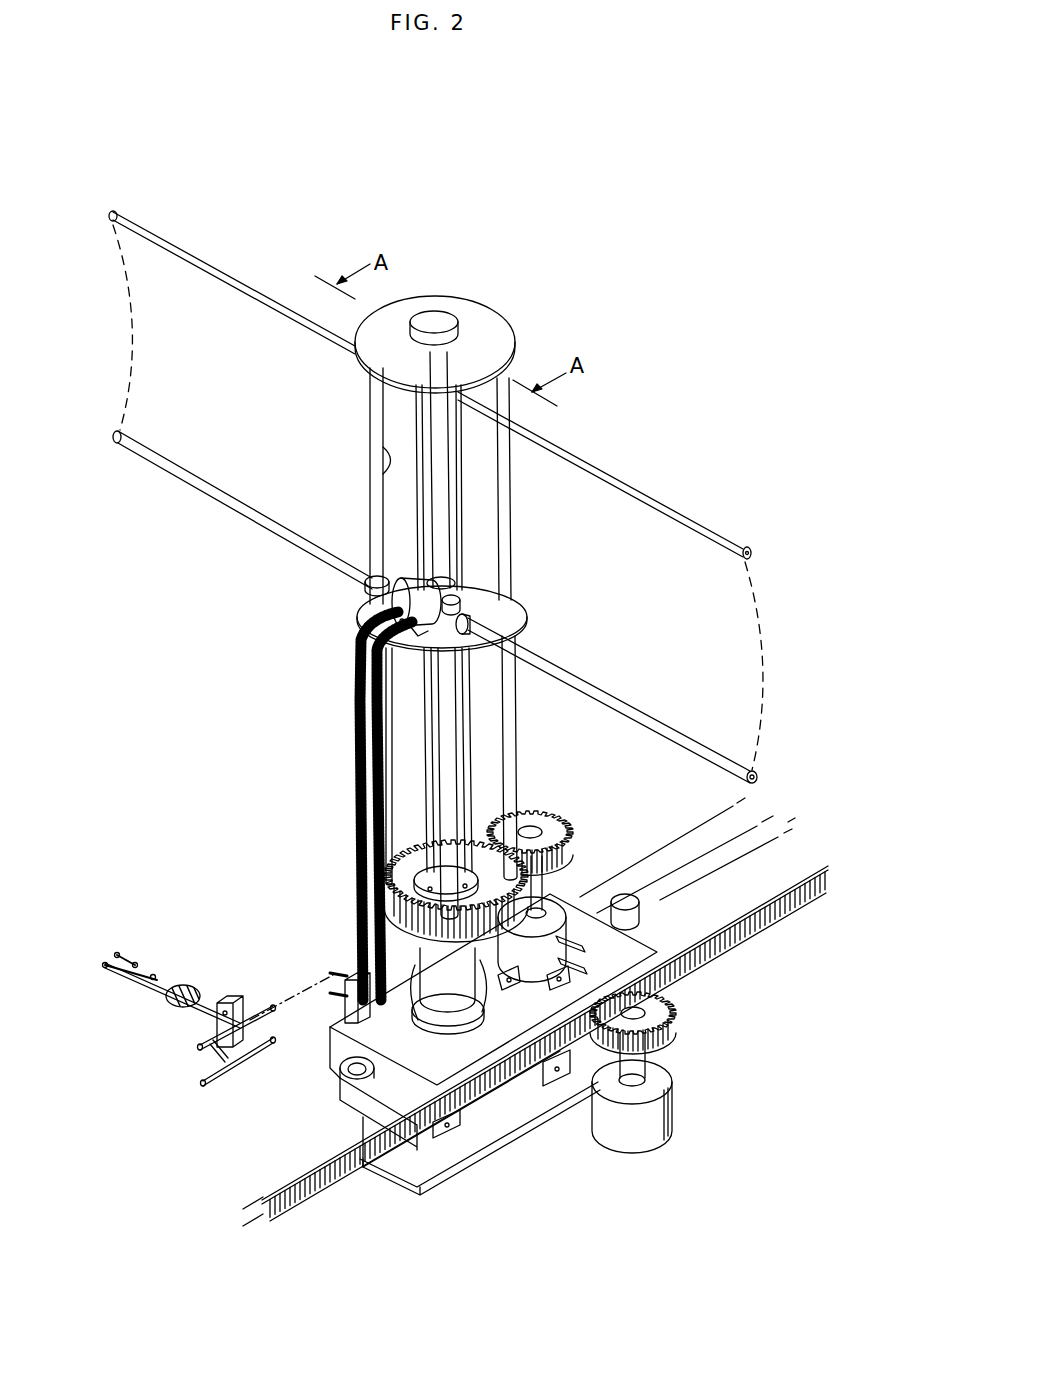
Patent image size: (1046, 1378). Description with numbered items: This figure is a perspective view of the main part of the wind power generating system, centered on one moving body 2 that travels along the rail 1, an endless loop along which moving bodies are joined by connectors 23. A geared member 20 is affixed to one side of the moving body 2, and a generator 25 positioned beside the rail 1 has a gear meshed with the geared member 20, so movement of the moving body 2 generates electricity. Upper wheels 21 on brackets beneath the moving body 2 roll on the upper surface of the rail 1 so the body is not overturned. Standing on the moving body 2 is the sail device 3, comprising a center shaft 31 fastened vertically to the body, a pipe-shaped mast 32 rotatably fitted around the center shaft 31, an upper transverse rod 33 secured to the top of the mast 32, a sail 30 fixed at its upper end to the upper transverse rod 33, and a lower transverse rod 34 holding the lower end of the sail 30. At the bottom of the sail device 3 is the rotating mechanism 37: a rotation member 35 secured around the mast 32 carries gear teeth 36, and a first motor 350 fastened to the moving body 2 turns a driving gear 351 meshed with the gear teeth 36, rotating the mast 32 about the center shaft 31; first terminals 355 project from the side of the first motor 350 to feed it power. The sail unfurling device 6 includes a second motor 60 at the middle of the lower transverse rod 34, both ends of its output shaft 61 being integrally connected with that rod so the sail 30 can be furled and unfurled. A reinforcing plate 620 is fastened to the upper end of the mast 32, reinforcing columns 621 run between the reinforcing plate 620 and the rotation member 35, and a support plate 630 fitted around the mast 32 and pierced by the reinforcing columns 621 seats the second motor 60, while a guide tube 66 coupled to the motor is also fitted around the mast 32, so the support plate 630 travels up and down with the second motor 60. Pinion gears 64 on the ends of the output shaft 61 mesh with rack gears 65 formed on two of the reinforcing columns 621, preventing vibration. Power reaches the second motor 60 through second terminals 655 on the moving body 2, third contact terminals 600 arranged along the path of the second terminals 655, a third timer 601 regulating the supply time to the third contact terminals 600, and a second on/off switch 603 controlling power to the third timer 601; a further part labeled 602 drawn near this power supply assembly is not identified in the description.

The rail 1 is at (530, 1128).
The moving body 2 is at (328, 1053).
The sail device 3 is at (258, 668).
The sail unfurling device 6 is at (324, 631).
The geared member 20 is at (735, 940).
The upper wheel 21 is at (345, 1079).
The connector 23 is at (705, 855).
The generator 25 is at (676, 1100).
The sail 30 is at (763, 629).
The center shaft 31 is at (437, 320).
The mast 32 is at (458, 708).
The upper transverse rod 33 is at (684, 515).
The lower transverse rod 34 is at (638, 712).
The rotation member 35 is at (478, 840).
The gear teeth 36 is at (426, 846).
The rotating mechanism 37 is at (527, 798).
The second motor 60 is at (391, 606).
The output shaft 61 is at (372, 570).
The pinion gear 64 is at (470, 616).
The rack gear 65 is at (381, 470).
The guide tube 66 is at (458, 595).
The first motor 350 is at (560, 897).
The driving gear 351 is at (546, 816).
The first terminals 355 is at (555, 977).
The third contact terminals 600 is at (250, 1040).
The third timer 601 is at (178, 1007).
The guide bars 602 is at (208, 1062).
The second on/off switch 603 is at (148, 963).
The reinforcing plate 620 is at (488, 317).
The reinforcing columns 621 is at (370, 418).
The support plate 630 is at (528, 612).
The second terminals 655 is at (352, 977).